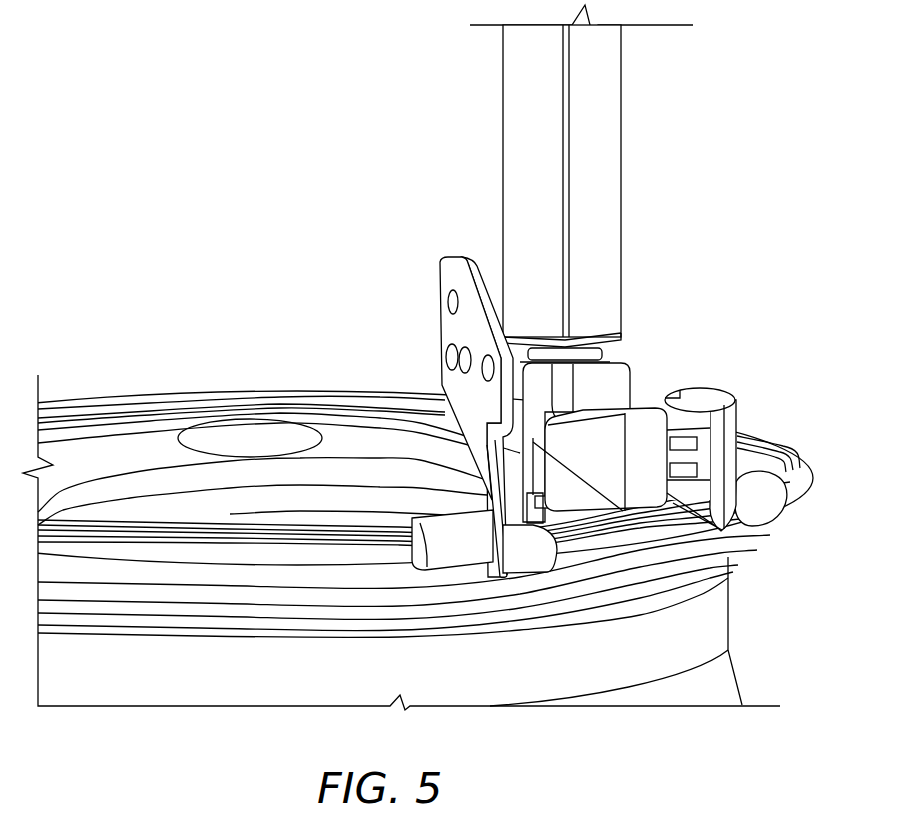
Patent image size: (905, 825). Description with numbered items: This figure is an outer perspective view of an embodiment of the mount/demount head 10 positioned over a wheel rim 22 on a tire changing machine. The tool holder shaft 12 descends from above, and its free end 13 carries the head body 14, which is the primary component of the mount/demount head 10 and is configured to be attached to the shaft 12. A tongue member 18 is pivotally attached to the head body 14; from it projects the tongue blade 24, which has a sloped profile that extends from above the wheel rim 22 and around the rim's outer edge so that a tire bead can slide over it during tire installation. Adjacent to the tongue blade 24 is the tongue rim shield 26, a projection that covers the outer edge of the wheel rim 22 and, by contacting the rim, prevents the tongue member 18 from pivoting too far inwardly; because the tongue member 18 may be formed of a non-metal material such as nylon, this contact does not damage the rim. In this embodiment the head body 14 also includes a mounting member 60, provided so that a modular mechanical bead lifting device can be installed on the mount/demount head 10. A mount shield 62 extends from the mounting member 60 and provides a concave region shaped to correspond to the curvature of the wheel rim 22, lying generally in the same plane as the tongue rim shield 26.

The mount/demount head 10 is at (740, 412).
The tool holder shaft 12 is at (623, 167).
The free end 13 is at (620, 343).
The head body 14 is at (605, 460).
The tongue member 18 is at (693, 398).
The wheel rim 22 is at (802, 462).
The tongue blade 24 is at (748, 480).
The tongue rim shield 26 is at (763, 507).
The mounting member 60 is at (453, 257).
The mount shield 62 is at (447, 554).